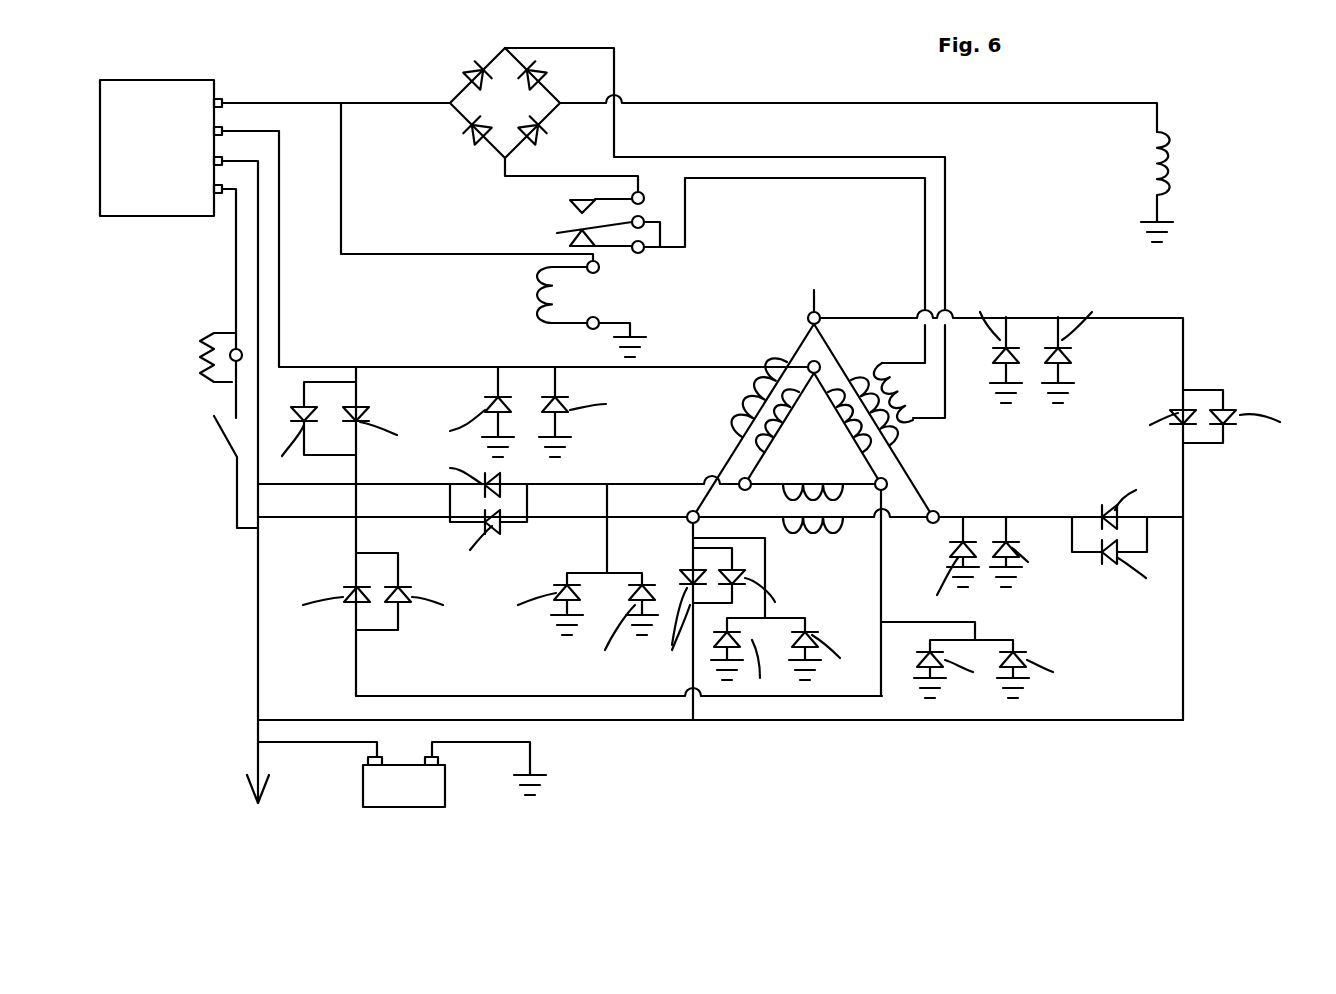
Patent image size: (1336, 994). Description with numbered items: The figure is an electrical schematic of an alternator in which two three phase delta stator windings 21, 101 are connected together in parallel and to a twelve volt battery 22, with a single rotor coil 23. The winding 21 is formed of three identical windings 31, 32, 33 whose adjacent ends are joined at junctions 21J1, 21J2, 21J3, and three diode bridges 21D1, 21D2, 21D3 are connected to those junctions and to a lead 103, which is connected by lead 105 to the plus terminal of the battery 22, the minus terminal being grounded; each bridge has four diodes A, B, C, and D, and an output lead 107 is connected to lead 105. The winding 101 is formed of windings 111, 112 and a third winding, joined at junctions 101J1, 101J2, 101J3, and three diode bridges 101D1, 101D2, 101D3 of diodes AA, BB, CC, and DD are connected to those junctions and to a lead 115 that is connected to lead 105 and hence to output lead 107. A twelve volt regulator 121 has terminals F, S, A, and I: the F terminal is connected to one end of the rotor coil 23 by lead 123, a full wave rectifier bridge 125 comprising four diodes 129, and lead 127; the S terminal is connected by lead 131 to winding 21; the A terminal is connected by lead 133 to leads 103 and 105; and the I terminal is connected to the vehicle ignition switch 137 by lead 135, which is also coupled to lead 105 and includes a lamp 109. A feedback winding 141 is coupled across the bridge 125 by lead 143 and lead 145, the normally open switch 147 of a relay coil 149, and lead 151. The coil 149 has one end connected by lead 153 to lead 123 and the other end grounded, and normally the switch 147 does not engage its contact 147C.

The regulator 121 is at (176, 220).
The lead 123 is at (253, 103).
The lead 131 is at (281, 182).
The lead 133 is at (261, 290).
The lead 135 is at (236, 283).
The lamp 109 is at (230, 363).
The ignition switch 137 is at (219, 440).
The full wave rectifier bridge 125 is at (440, 72).
The diodes 129 is at (483, 66).
The lead 127 is at (745, 103).
The rotor coil 23 is at (1178, 160).
The lead 143 is at (947, 240).
The lead 151 is at (505, 178).
The contact 147C is at (568, 208).
The normally open switch 147 is at (567, 232).
The lead 145 is at (925, 210).
The lead 153 is at (370, 246).
The relay coil 149 is at (540, 300).
The feedback winding 141 is at (880, 372).
The junction 101J1 is at (814, 290).
The junction 21J1 is at (808, 361).
The three phase delta stator winding 101 is at (847, 538).
The three phase delta stator winding 21 is at (817, 470).
The winding 112 is at (738, 410).
The winding 33 is at (735, 447).
The winding 111 is at (905, 440).
The winding 31 is at (870, 450).
The winding 32 is at (862, 477).
The junction 21J3 is at (739, 480).
The junction 21J2 is at (884, 492).
The junction 101J2 is at (940, 511).
The junction 101J3 is at (691, 524).
The lead 103 is at (283, 488).
The lead 105 is at (258, 632).
The output lead 107 is at (258, 757).
The battery 22 is at (390, 808).
The lead 115 is at (577, 722).
The diode bridge 21D1 is at (445, 402).
The diode bridge 21D3 is at (590, 557).
The diode bridge 21D2 is at (487, 667).
The diode bridge 101D1 is at (1172, 400).
The diode bridge 101D2 is at (1120, 609).
The diode bridge 101D3 is at (880, 624).